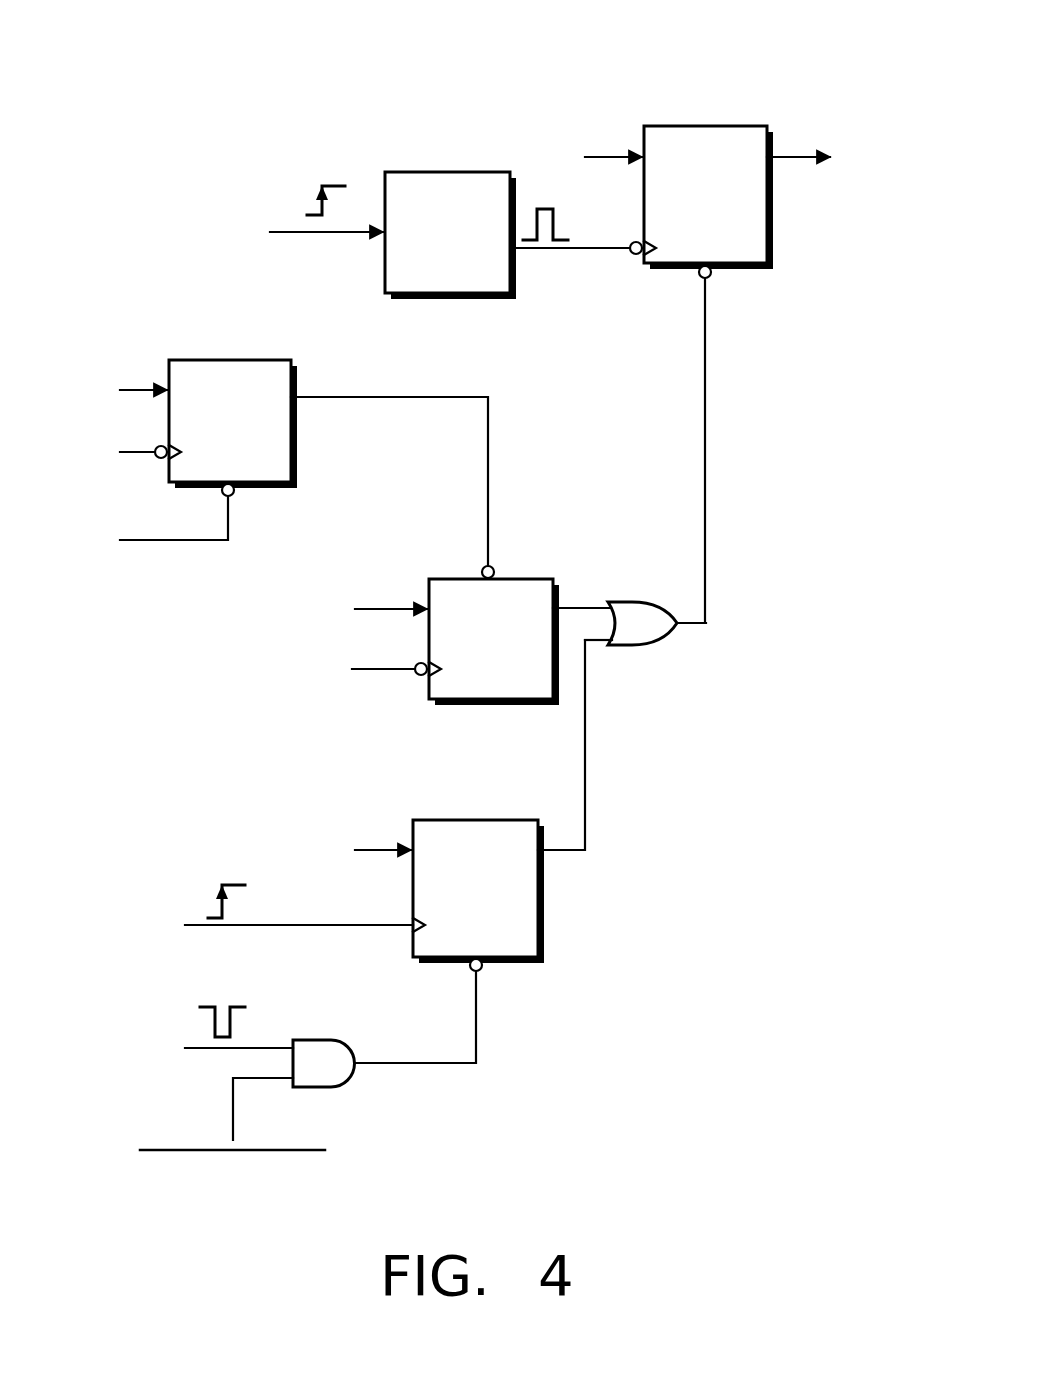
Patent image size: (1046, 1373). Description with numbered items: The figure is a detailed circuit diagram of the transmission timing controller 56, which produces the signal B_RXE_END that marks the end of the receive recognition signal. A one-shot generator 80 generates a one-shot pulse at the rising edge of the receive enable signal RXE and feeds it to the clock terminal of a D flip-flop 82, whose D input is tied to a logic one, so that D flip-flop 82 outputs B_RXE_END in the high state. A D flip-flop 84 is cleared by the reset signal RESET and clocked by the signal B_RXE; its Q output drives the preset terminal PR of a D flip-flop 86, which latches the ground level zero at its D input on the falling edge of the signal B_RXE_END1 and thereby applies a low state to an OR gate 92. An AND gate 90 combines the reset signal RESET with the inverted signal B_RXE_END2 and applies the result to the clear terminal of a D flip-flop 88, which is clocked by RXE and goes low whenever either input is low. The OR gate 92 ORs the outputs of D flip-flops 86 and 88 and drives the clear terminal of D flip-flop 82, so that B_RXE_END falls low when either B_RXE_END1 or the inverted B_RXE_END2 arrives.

The transmission timing controller 56 is at (272, 88).
The one-shot generator 80 is at (444, 172).
The D flip-flop 82 is at (704, 126).
The D flip-flop 84 is at (228, 360).
The D flip-flop 86 is at (534, 579).
The D flip-flop 88 is at (474, 820).
The AND gate 90 is at (326, 1040).
The OR gate 92 is at (636, 601).